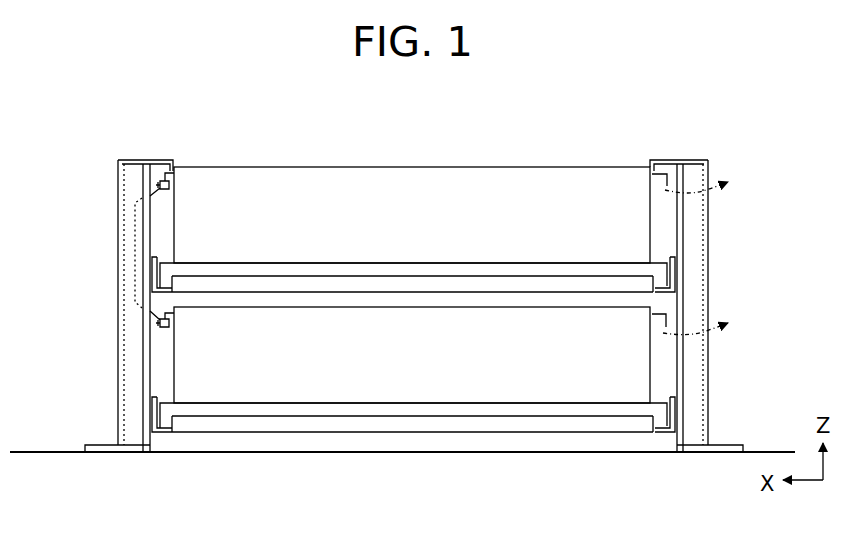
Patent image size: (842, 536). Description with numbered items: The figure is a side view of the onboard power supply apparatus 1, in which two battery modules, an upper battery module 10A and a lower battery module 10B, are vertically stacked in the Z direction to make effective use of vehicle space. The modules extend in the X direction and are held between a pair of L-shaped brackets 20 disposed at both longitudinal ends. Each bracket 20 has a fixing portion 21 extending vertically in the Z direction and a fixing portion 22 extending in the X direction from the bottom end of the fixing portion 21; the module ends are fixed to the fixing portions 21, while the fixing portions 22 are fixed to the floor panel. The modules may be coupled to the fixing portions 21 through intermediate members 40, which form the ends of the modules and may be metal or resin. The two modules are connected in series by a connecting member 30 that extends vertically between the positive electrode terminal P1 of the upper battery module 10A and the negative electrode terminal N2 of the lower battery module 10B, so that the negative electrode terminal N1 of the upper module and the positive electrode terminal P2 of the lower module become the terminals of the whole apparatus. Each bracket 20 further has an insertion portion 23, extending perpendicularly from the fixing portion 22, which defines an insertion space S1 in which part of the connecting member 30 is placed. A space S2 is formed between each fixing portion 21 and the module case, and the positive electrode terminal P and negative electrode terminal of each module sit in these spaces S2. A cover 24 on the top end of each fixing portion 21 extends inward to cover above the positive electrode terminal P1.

The onboard power supply apparatus 1 is at (81, 176).
The upper battery module 10A is at (318, 143).
The lower battery module 10B is at (391, 440).
The bracket 20 is at (114, 295).
The fixing portion 21 is at (147, 382).
The fixing portion 22 is at (103, 444).
The insertion portion 23 is at (118, 341).
The cover 24 is at (143, 161).
The connecting member 30 is at (131, 251).
The intermediate member 40 is at (156, 257).
The insertion space S1 is at (133, 193).
The space S2 is at (163, 214).
The positive electrode terminal P is at (35, 452).
The positive electrode terminal P1 is at (174, 173).
The negative electrode terminal N1 is at (652, 174).
The positive electrode terminal P2 is at (652, 313).
The negative electrode terminal N2 is at (172, 313).